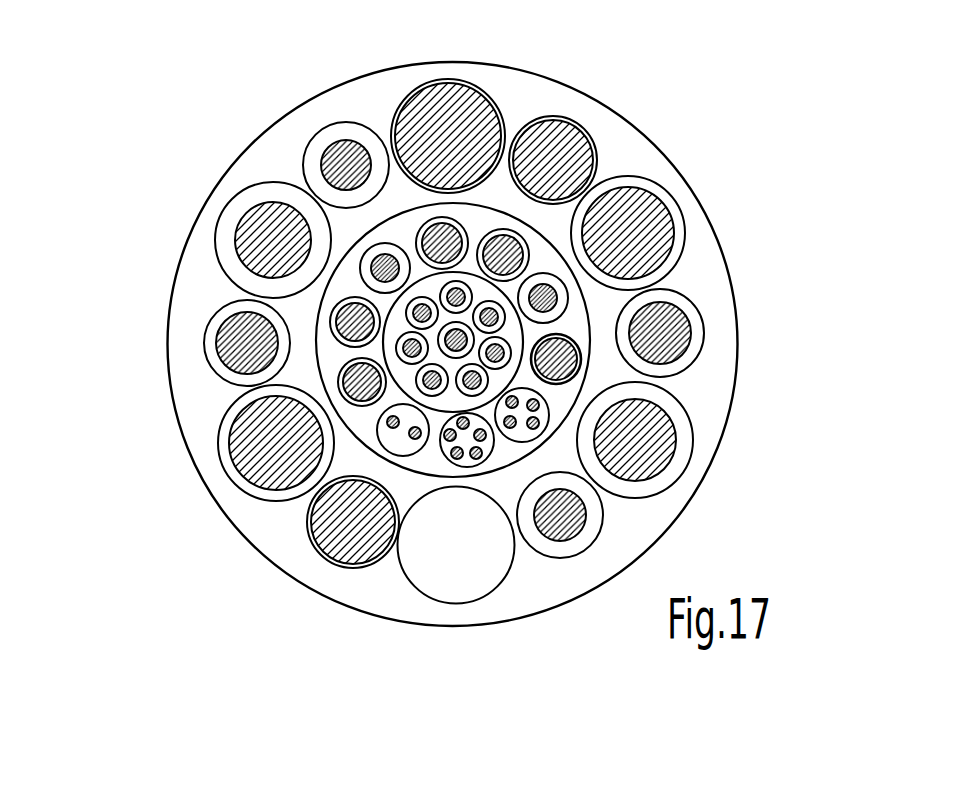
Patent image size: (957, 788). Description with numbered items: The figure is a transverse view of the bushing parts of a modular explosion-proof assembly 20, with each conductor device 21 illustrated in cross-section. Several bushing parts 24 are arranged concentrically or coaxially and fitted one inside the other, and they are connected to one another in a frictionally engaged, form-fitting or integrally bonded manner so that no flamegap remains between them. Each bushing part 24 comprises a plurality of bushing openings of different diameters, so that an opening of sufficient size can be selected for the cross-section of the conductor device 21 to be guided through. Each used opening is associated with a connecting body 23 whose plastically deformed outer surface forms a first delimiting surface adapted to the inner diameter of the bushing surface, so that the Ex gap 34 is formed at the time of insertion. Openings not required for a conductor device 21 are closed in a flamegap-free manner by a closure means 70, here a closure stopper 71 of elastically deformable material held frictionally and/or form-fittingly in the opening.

The explosion-proof assembly 20 is at (747, 163).
The conductor device 21 is at (643, 217).
The connecting body 23 is at (250, 198).
The bushing part 24 is at (478, 230).
The Ex gap 34 is at (690, 235).
The closure means 70 is at (456, 612).
The closure stopper 71 is at (455, 578).